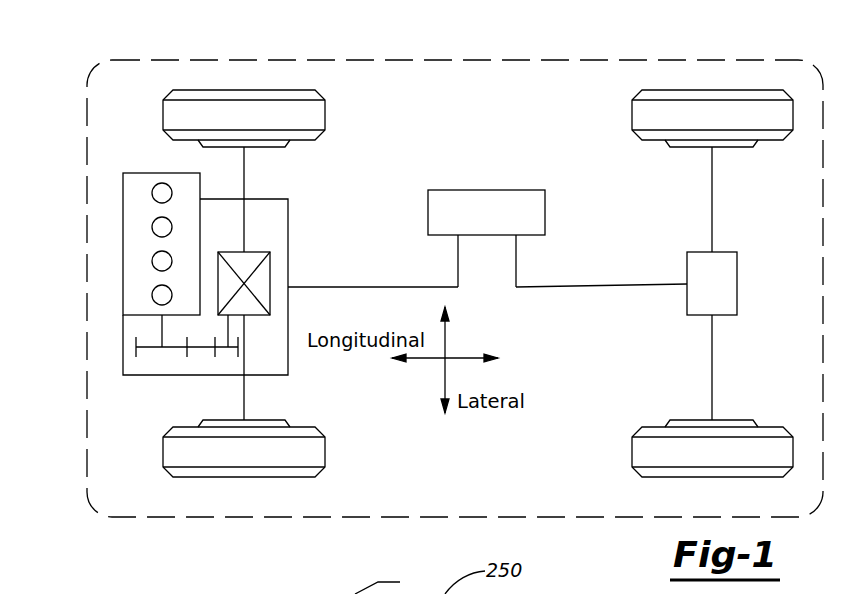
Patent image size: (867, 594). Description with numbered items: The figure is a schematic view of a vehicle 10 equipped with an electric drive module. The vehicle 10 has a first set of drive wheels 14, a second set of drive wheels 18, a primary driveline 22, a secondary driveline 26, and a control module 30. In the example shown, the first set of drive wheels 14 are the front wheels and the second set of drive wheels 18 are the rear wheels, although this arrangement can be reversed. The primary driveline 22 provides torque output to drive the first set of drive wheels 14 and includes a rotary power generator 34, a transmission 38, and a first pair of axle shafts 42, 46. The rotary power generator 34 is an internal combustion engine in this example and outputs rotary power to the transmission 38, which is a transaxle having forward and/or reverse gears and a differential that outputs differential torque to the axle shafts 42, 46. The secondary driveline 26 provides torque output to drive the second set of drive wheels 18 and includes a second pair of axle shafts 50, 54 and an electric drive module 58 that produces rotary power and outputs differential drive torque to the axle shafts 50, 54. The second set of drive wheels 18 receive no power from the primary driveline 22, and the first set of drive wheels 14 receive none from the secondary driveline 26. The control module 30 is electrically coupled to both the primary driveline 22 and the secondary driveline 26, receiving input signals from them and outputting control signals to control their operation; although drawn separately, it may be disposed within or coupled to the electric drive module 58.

The vehicle 10 is at (228, 47).
The first set of drive wheels 14 is at (173, 117).
The second set of drive wheels 18 is at (632, 110).
The primary driveline 22 is at (121, 283).
The secondary driveline 26 is at (731, 322).
The control module 30 is at (490, 190).
The rotary power generator 34 is at (123, 194).
The transmission 38 is at (145, 375).
The axle shaft 42 is at (244, 398).
The axle shaft 46 is at (245, 168).
The axle shaft 50 is at (712, 368).
The axle shaft 54 is at (712, 198).
The electric drive module 58 is at (738, 268).